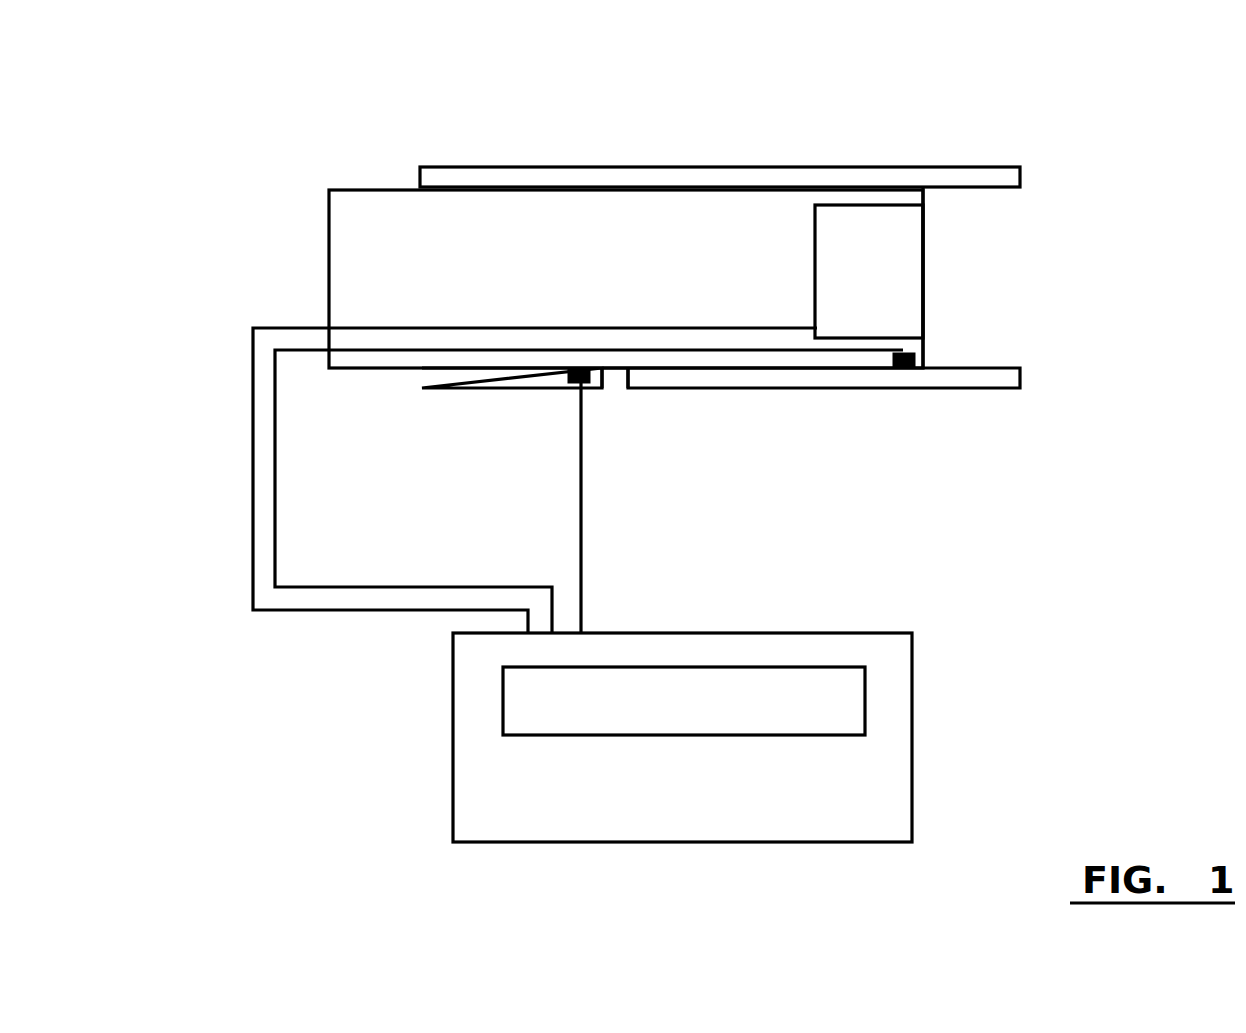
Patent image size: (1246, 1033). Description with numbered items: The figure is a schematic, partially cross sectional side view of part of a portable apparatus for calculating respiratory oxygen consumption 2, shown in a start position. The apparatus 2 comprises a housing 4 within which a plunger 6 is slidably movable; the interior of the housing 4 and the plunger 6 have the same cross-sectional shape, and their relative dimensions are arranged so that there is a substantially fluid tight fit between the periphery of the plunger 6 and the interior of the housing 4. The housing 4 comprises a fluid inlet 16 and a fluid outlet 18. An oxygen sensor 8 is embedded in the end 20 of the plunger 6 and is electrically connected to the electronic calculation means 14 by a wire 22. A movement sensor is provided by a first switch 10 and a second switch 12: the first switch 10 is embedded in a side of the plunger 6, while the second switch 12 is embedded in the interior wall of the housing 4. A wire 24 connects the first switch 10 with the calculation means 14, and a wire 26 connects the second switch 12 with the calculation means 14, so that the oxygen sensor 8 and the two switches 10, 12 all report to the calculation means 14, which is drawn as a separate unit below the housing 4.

The portable apparatus for calculating respiratory oxygen consumption 2 is at (913, 138).
The housing 4 is at (1002, 180).
The plunger 6 is at (363, 225).
The oxygen sensor 8 is at (840, 230).
The first switch 10 is at (900, 368).
The second switch 12 is at (582, 384).
The electronic calculation means 14 is at (913, 668).
The fluid inlet 16 is at (1036, 305).
The fluid outlet 18 is at (622, 400).
The end of the plunger 20 is at (923, 237).
The wire 22 is at (252, 451).
The wire 24 is at (277, 472).
The wire 26 is at (581, 495).